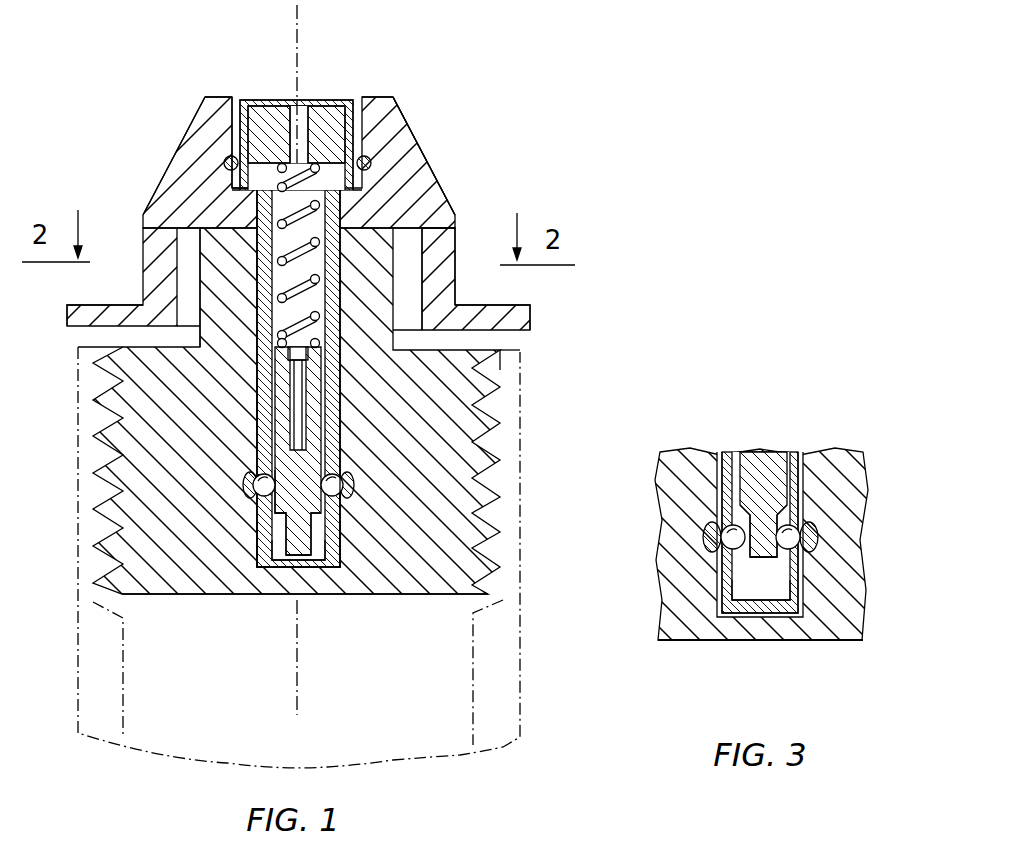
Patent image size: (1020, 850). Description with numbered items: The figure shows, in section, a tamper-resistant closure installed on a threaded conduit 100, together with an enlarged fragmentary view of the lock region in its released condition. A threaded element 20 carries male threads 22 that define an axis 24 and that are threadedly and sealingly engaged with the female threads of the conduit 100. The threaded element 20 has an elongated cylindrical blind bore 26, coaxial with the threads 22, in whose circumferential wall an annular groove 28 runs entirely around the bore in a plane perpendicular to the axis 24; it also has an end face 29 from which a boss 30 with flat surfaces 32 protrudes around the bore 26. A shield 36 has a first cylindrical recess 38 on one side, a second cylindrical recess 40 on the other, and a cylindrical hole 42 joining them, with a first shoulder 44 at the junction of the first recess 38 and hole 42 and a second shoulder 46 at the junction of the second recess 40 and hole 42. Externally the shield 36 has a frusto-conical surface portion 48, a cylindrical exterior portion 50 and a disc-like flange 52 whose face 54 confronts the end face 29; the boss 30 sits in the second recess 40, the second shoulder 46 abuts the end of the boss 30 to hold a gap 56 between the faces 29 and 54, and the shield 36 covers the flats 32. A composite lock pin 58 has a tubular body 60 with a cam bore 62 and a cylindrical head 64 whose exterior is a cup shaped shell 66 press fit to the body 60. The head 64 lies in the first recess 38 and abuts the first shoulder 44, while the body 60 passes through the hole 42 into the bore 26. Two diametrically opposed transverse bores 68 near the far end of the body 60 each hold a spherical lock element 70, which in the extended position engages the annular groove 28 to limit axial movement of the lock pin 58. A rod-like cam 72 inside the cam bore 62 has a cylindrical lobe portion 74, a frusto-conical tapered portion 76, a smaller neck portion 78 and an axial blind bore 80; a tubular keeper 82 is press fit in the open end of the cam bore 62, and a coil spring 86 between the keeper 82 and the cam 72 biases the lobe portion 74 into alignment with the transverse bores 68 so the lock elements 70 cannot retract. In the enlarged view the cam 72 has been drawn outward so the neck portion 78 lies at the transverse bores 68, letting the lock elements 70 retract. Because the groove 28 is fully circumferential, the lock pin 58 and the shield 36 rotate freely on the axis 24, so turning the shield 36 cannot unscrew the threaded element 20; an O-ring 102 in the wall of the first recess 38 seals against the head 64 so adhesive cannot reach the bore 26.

In FIG. 1, the threaded element 20 is at (422, 598).
In FIG. 1, the threads 22 is at (493, 447).
In FIG. 1, the axis 24 is at (300, 58).
In FIG. 1, the blind bore 26 is at (345, 532).
In FIG. 1, the annular groove 28 is at (352, 496).
In FIG. 3, the annular groove 28 is at (822, 543).
In FIG. 1, the end face 29 is at (200, 345).
In FIG. 1, the boss 30 is at (403, 235).
In FIG. 1, the flat surfaces 32 is at (453, 232).
In FIG. 1, the shield 36 is at (420, 116).
In FIG. 1, the first cylindrical recess 38 is at (358, 100).
In FIG. 1, the second cylindrical recess 40 is at (425, 307).
In FIG. 1, the cylindrical hole 42 is at (345, 210).
In FIG. 1, the first shoulder 44 is at (233, 193).
In FIG. 1, the second shoulder 46 is at (197, 226).
In FIG. 1, the frusto-conical exterior surface portion 48 is at (412, 118).
In FIG. 1, the cylindrical exterior portion 50 is at (143, 257).
In FIG. 1, the disc-like flange 52 is at (528, 318).
In FIG. 1, the face 54 is at (518, 336).
In FIG. 1, the gap 56 is at (478, 350).
In FIG. 1, the composite lock pin 58 is at (253, 403).
In FIG. 1, the tubular body 60 is at (255, 550).
In FIG. 3, the tubular body 60 is at (723, 597).
In FIG. 1, the cam bore 62 is at (280, 537).
In FIG. 3, the cam bore 62 is at (752, 590).
In FIG. 1, the cylindrical head 64 is at (252, 92).
In FIG. 1, the cup shaped shell 66 is at (263, 107).
In FIG. 1, the transverse bores 68 is at (262, 468).
In FIG. 3, the transverse bores 68 is at (720, 518).
In FIG. 1, the spherical lock element 70 is at (250, 484).
In FIG. 3, the spherical lock element 70 is at (708, 533).
In FIG. 1, the cam 72 is at (328, 440).
In FIG. 3, the cam 72 is at (773, 448).
In FIG. 1, the lobe portion 74 is at (282, 502).
In FIG. 3, the lobe portion 74 is at (745, 470).
In FIG. 1, the tapered portion 76 is at (278, 513).
In FIG. 1, the neck portion 78 is at (302, 543).
In FIG. 3, the neck portion 78 is at (768, 556).
In FIG. 1, the blind bore 80 is at (300, 385).
In FIG. 1, the tubular keeper 82 is at (312, 107).
In FIG. 1, the coil spring 86 is at (286, 266).
In FIG. 1, the threaded conduit 100 is at (500, 700).
In FIG. 1, the O-ring 102 is at (229, 156).